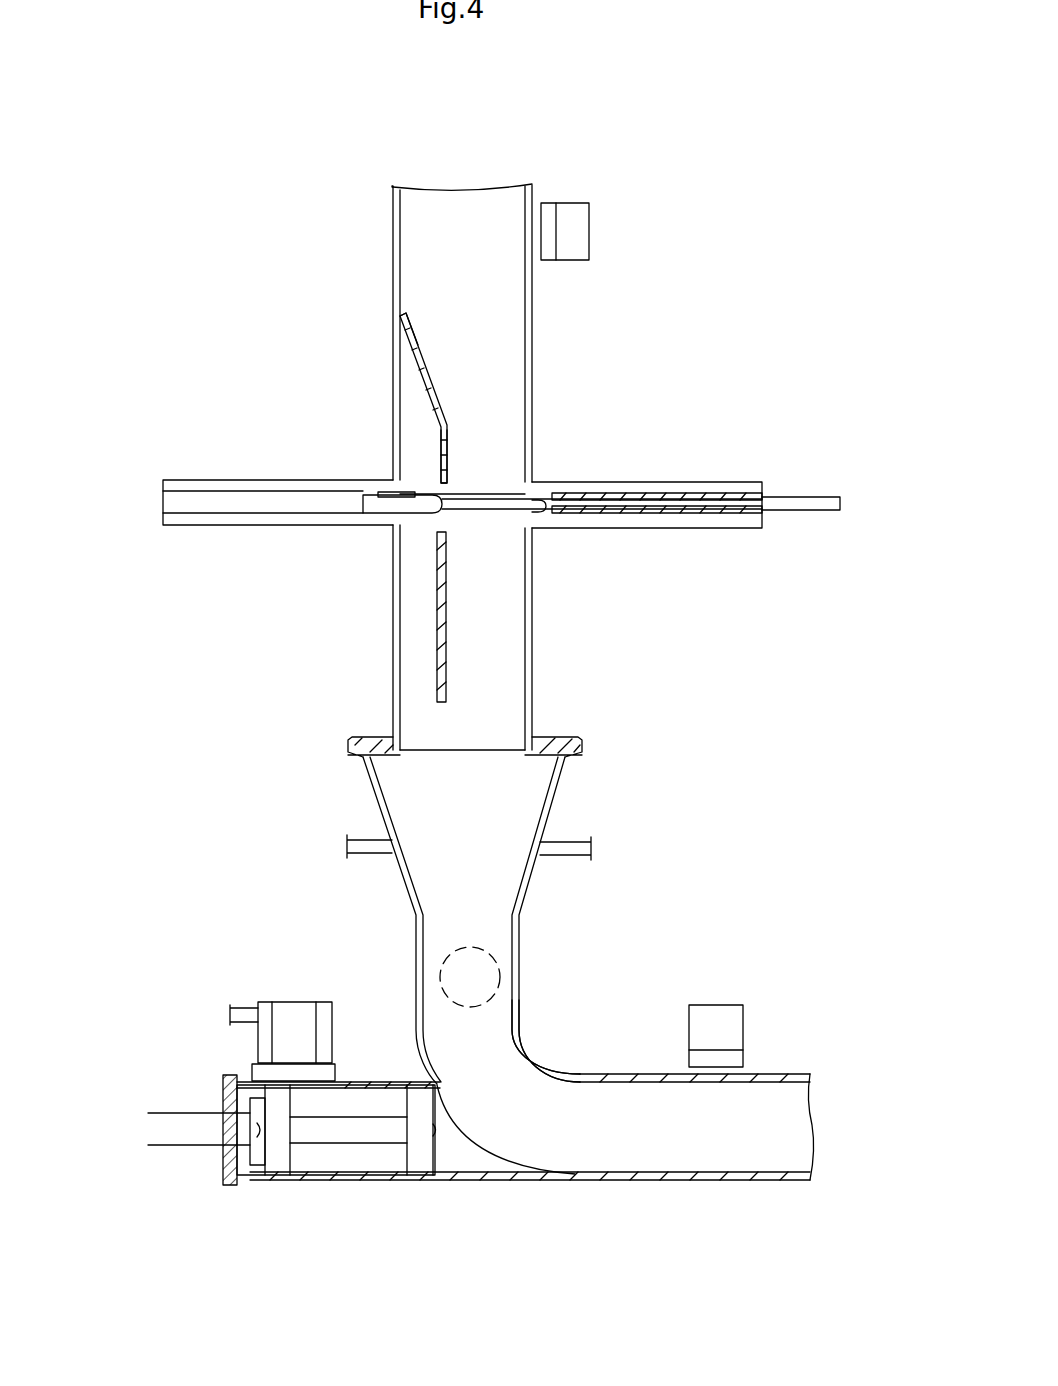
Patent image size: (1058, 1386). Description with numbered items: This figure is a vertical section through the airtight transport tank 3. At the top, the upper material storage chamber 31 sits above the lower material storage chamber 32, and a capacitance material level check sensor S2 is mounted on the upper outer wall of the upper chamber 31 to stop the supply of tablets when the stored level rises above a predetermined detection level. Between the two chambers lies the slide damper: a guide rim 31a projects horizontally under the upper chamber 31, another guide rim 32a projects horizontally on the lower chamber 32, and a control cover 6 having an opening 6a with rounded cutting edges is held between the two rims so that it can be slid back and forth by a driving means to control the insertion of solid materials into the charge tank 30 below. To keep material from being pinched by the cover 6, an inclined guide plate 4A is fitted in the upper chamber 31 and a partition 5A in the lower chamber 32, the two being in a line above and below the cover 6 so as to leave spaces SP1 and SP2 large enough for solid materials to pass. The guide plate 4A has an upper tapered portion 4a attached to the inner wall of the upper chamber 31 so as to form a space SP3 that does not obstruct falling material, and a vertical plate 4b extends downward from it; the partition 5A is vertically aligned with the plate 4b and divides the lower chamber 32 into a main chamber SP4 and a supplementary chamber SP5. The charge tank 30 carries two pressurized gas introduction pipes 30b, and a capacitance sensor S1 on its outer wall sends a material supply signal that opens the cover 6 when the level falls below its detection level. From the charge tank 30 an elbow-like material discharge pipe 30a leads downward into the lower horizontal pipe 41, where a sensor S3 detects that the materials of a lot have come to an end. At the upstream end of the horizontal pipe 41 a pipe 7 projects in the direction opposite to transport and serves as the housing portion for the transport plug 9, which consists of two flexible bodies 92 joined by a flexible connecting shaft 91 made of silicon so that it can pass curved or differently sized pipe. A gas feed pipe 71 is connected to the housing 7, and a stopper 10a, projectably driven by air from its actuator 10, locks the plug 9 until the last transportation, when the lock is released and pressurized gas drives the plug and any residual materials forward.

The airtight transport tank 3 is at (340, 218).
The upper material storage chamber 31 is at (508, 336).
The lower material storage chamber 32 is at (533, 636).
The capacitance material level check sensor S2 is at (568, 212).
The inclined guide plate 4A is at (418, 372).
The upper tapered portion 4a is at (408, 346).
The vertical plate 4b is at (447, 446).
The space SP1 is at (400, 484).
The space SP2 is at (440, 523).
The space SP3 is at (414, 406).
The main chamber SP4 is at (503, 600).
The supplementary chamber SP5 is at (418, 579).
The guide rim 32a is at (254, 517).
The guide rim 31a is at (683, 482).
The control cover 6 is at (806, 510).
The opening 6a is at (487, 508).
The partition 5A is at (438, 627).
The charge tank 30 is at (560, 792).
The pressurized gas introduction pipes 30b is at (364, 846).
The material discharge pipe 30a is at (522, 1018).
The capacitance material level check sensor S1 is at (500, 960).
The lower horizontal pipe 41 is at (676, 1182).
The transport plug housing portion 7 is at (480, 1180).
The sensor S3 is at (724, 1015).
The motor 10 is at (298, 1014).
The stopper 10a is at (340, 1083).
The transport plug 9 is at (385, 1220).
The flexible bodies 92 is at (279, 1166).
The flexible connecting shaft 91 is at (341, 1133).
The gas feed pipe 71 is at (175, 1136).